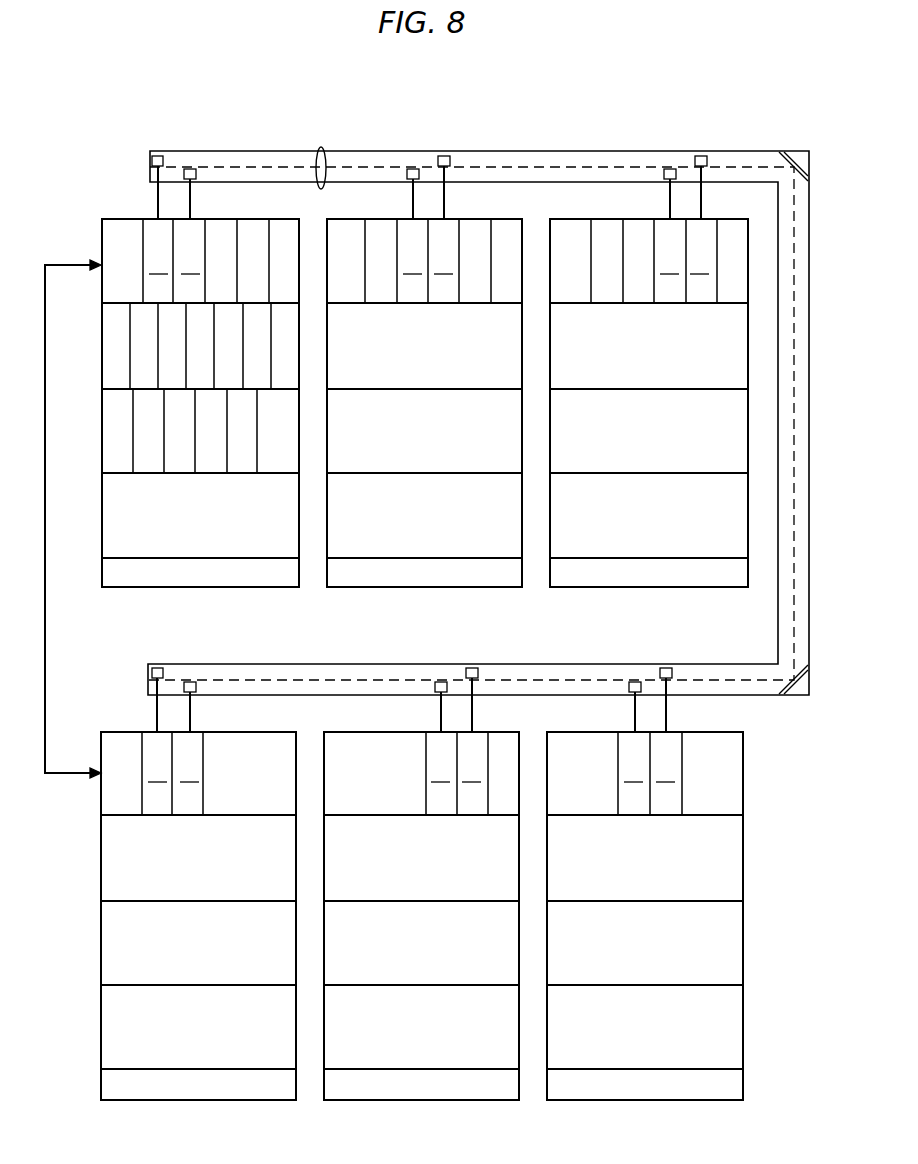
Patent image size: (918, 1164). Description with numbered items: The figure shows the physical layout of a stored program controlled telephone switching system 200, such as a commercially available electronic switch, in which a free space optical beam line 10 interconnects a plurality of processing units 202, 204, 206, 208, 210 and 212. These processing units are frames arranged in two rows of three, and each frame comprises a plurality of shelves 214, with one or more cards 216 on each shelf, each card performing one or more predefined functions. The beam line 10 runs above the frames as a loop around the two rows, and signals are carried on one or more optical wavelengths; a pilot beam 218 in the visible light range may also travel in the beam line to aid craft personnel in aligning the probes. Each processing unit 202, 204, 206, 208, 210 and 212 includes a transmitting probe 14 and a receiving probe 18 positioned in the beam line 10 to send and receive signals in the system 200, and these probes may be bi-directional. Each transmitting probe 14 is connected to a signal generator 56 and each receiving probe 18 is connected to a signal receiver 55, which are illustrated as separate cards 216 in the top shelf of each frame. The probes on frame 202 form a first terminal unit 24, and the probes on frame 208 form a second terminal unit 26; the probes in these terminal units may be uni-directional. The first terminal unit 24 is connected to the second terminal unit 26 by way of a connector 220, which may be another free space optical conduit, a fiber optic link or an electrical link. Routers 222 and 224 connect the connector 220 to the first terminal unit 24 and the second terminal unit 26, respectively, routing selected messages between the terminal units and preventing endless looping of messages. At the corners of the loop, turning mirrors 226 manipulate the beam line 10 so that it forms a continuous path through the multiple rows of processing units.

The telephone switching system 200 is at (533, 118).
The pilot beam 218 is at (272, 151).
The turning mirrors 226 is at (795, 150).
The free space optical beam line 10 is at (321, 146).
The first terminal unit 24 is at (150, 160).
The second terminal unit 26 is at (150, 682).
The transmitting probe 14 is at (196, 181).
The receiving probe 18 is at (158, 155).
The shelves 214 is at (103, 303).
The processing unit 202 is at (194, 399).
The processing unit 204 is at (399, 589).
The processing unit 206 is at (599, 589).
The processing unit 208 is at (177, 912).
The processing unit 210 is at (386, 1101).
The processing unit 212 is at (596, 1101).
The cards 216 is at (297, 478).
The router 222 is at (122, 226).
The router 224 is at (122, 740).
The signal receiver 55 is at (160, 263).
The signal generator 56 is at (192, 263).
The connector 220 is at (47, 640).